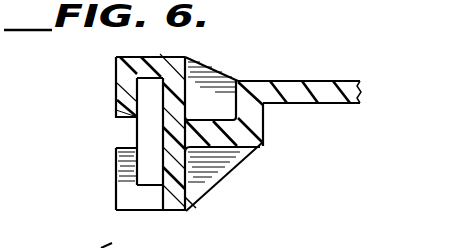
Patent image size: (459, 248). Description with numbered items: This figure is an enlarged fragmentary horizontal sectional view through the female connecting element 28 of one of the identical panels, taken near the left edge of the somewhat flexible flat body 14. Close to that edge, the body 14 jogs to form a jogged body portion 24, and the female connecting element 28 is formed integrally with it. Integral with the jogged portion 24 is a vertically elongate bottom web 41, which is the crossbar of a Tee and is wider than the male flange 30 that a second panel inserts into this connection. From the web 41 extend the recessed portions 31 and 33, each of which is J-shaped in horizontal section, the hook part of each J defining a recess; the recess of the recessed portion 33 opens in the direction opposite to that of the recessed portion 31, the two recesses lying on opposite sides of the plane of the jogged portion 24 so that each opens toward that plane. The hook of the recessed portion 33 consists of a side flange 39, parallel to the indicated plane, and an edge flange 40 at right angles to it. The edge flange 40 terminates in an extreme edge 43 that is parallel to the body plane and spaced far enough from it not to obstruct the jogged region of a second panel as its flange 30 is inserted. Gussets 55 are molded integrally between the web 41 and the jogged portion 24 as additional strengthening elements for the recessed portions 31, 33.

The flat body 14 is at (305, 80).
The jogged body portion 24 is at (226, 160).
The female connecting element 28 is at (114, 171).
The male flange 30 is at (137, 97).
The recessed portion 31 is at (120, 200).
The recessed portion 33 is at (114, 66).
The side flange 39 is at (153, 59).
The edge flange 40 is at (117, 107).
The bottom web 41 is at (195, 205).
The extreme edge 43 is at (132, 124).
The gusset 55 is at (231, 79).